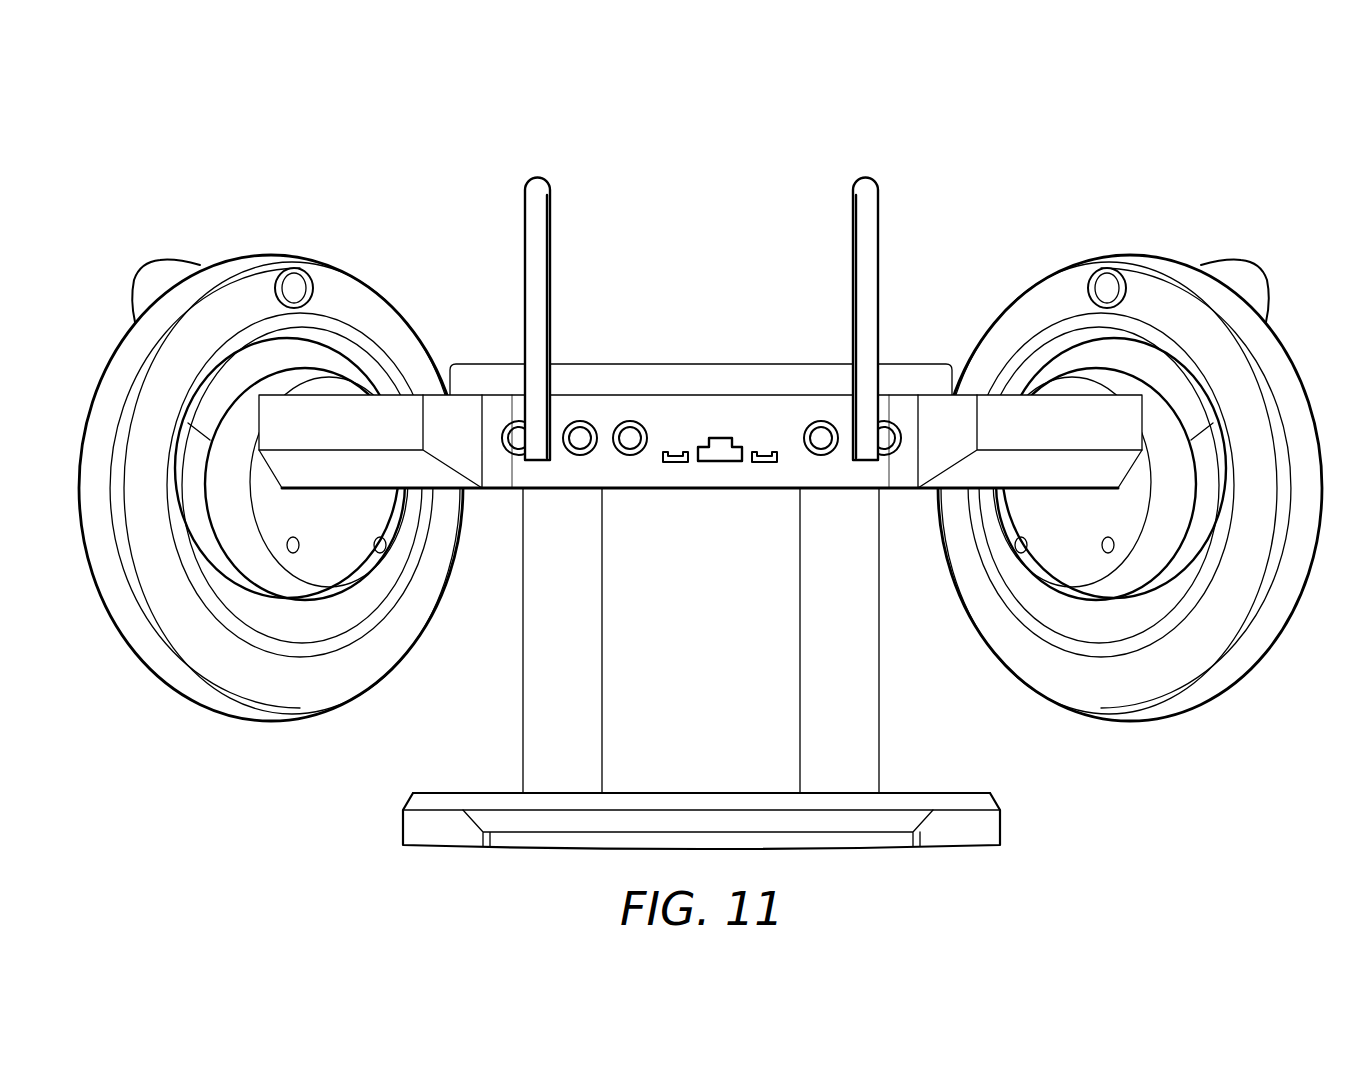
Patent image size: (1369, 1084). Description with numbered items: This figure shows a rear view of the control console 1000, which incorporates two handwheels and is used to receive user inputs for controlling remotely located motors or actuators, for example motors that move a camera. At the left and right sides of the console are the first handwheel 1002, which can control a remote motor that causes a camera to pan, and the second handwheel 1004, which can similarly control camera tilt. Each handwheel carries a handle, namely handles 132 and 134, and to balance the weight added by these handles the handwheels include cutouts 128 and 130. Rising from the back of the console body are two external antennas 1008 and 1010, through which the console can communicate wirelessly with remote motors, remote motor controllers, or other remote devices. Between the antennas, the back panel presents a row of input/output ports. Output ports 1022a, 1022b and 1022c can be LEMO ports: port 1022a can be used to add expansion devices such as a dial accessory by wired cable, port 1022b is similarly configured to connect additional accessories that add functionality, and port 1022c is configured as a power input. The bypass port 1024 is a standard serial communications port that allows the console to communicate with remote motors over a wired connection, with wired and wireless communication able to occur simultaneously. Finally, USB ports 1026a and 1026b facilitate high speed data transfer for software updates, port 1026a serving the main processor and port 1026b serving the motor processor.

The control console 1000 is at (1174, 119).
The first handwheel 1002 is at (271, 466).
The second handwheel 1004 is at (1130, 466).
The external antenna 1008 is at (537, 178).
The external antenna 1010 is at (867, 178).
The cutout 128 is at (292, 358).
The cutout 130 is at (1109, 358).
The handle 132 is at (153, 270).
The handle 134 is at (1248, 270).
The output port 1022a is at (578, 433).
The output port 1022b is at (630, 430).
The output port 1022c is at (823, 433).
The bypass port 1024 is at (720, 460).
The USB port 1026a is at (675, 450).
The USB port 1026b is at (765, 450).